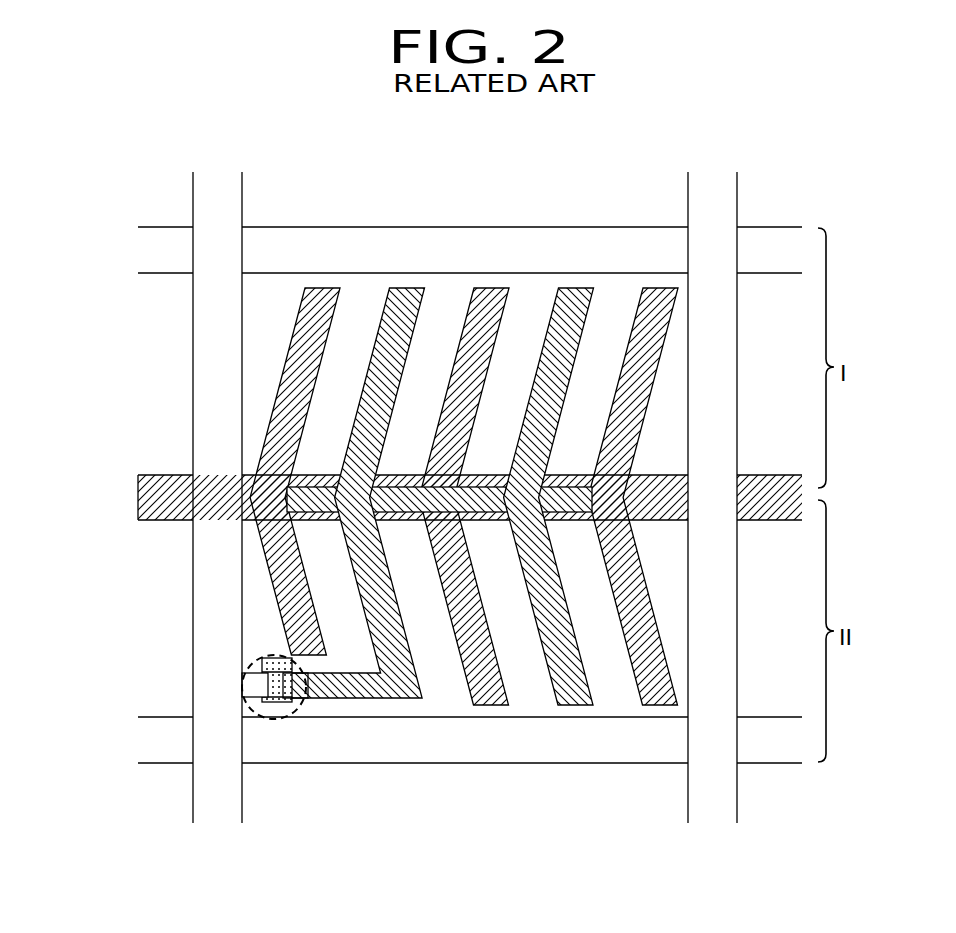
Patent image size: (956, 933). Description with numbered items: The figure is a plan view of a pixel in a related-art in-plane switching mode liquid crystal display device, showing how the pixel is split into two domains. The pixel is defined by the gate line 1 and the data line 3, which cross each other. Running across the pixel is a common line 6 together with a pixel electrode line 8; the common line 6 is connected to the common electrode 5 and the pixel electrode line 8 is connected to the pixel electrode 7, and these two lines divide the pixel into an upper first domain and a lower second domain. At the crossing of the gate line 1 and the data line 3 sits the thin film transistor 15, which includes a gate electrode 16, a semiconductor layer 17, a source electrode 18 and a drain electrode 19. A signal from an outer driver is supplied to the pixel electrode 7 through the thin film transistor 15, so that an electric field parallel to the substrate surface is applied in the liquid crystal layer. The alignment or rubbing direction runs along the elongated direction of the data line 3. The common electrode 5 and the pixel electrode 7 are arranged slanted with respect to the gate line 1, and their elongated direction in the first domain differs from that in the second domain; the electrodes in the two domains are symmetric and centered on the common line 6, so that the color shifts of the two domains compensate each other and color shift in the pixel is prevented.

The gate line 1 is at (167, 752).
The data line 3 is at (213, 583).
The common electrode 5 is at (487, 706).
The common line 6 is at (158, 493).
The pixel electrode 7 is at (575, 706).
The pixel electrode line 8 is at (290, 490).
The thin film transistor 15 is at (263, 724).
The gate electrode 16 is at (276, 708).
The semiconductor layer 17 is at (250, 667).
The source electrode 18 is at (258, 688).
The drain electrode 19 is at (298, 712).